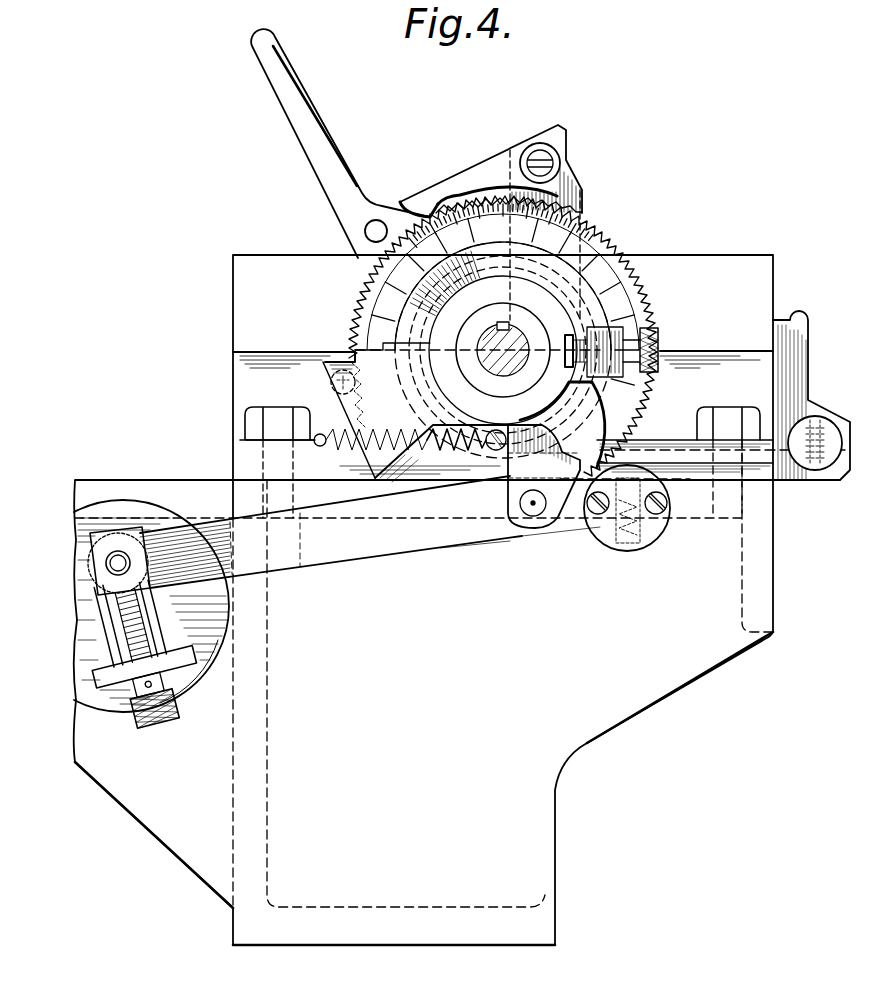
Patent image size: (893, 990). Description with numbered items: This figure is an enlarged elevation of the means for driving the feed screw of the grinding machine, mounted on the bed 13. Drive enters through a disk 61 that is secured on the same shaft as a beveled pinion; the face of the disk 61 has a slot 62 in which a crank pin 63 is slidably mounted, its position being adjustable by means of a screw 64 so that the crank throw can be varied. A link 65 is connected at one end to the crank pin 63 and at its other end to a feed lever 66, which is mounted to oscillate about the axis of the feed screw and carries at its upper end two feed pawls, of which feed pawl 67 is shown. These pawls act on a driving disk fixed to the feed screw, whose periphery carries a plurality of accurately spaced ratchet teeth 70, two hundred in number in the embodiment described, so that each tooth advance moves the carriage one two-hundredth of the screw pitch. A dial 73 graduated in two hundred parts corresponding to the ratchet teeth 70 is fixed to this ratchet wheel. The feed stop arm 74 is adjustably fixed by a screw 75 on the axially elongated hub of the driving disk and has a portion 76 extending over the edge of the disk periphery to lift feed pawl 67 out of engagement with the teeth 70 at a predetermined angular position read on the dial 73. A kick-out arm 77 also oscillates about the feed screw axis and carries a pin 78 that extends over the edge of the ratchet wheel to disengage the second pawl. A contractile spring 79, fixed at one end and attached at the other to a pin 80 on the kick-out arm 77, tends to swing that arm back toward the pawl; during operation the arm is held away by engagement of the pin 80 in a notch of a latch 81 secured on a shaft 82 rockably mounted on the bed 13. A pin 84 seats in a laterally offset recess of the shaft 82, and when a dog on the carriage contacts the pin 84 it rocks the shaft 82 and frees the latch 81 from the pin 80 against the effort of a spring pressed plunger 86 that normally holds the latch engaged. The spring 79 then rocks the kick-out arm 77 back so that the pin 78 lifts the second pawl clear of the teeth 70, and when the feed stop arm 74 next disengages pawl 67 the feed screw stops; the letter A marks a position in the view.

The bed 13 is at (240, 327).
The disk 61 is at (180, 672).
The slot 62 is at (153, 618).
The crank pin 63 is at (115, 572).
The screw 64 is at (157, 713).
The link 65 is at (330, 554).
The feed lever 66 is at (578, 200).
The feed pawl 67 is at (488, 164).
The ratchet teeth 70 is at (490, 199).
The dial 73 is at (593, 231).
The feed stop arm 74 is at (412, 348).
The screw 75 is at (660, 342).
The portion 76 is at (352, 356).
The kick-out arm 77 is at (387, 217).
The pin 78 is at (365, 231).
The contractile spring 79 is at (332, 427).
The pin 80 is at (497, 443).
The latch 81 is at (710, 496).
The shaft 82 is at (833, 427).
The pin 84 is at (798, 318).
The spring pressed plunger 86 is at (633, 463).
The position A is at (672, 442).